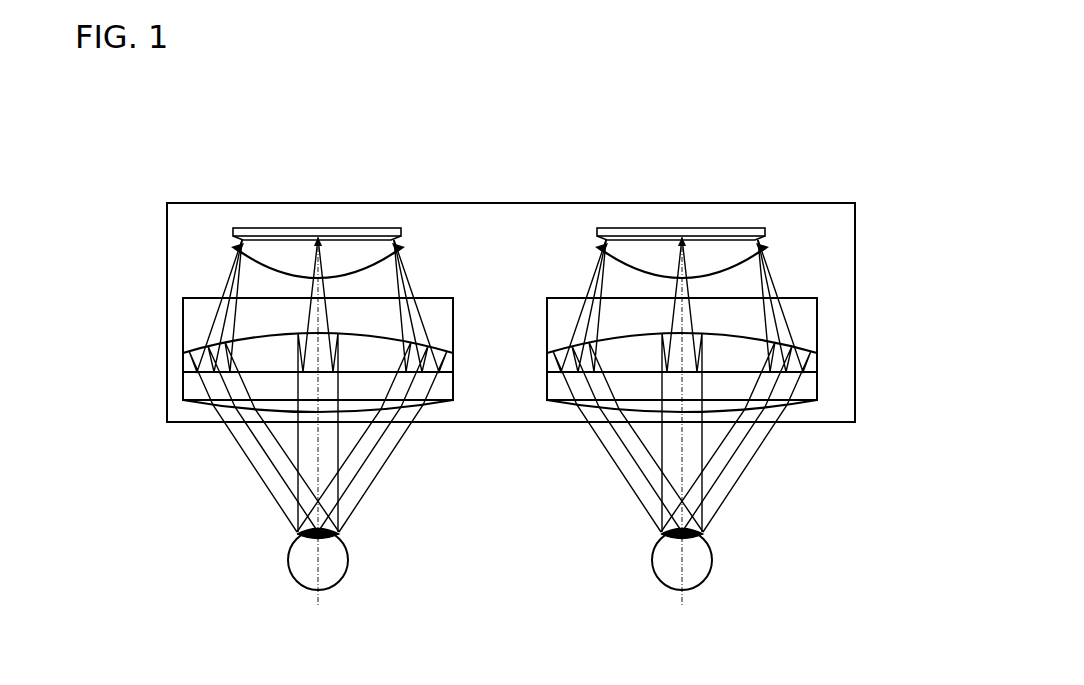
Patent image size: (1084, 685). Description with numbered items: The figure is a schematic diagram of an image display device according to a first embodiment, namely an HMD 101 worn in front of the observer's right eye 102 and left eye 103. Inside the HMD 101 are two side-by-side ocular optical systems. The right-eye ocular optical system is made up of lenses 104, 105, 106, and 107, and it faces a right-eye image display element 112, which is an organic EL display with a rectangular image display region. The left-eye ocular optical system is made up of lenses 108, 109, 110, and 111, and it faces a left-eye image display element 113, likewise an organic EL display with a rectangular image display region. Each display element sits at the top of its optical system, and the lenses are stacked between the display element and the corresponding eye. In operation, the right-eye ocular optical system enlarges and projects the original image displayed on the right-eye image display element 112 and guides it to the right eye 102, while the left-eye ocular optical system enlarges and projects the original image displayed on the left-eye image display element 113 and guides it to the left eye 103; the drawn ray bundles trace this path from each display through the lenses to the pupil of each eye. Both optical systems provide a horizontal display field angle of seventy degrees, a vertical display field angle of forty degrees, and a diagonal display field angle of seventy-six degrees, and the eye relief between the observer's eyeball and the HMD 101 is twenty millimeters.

The HMD 101 is at (188, 203).
The right eye 102 is at (695, 585).
The left eye 103 is at (331, 585).
The lens 104 is at (803, 402).
The lens 105 is at (818, 363).
The lens 106 is at (818, 315).
The lens 107 is at (772, 251).
The lens 108 is at (180, 387).
The lens 109 is at (182, 358).
The lens 110 is at (182, 303).
The lens 111 is at (233, 247).
The right-eye image display element 112 is at (721, 228).
The left-eye image display element 113 is at (357, 228).